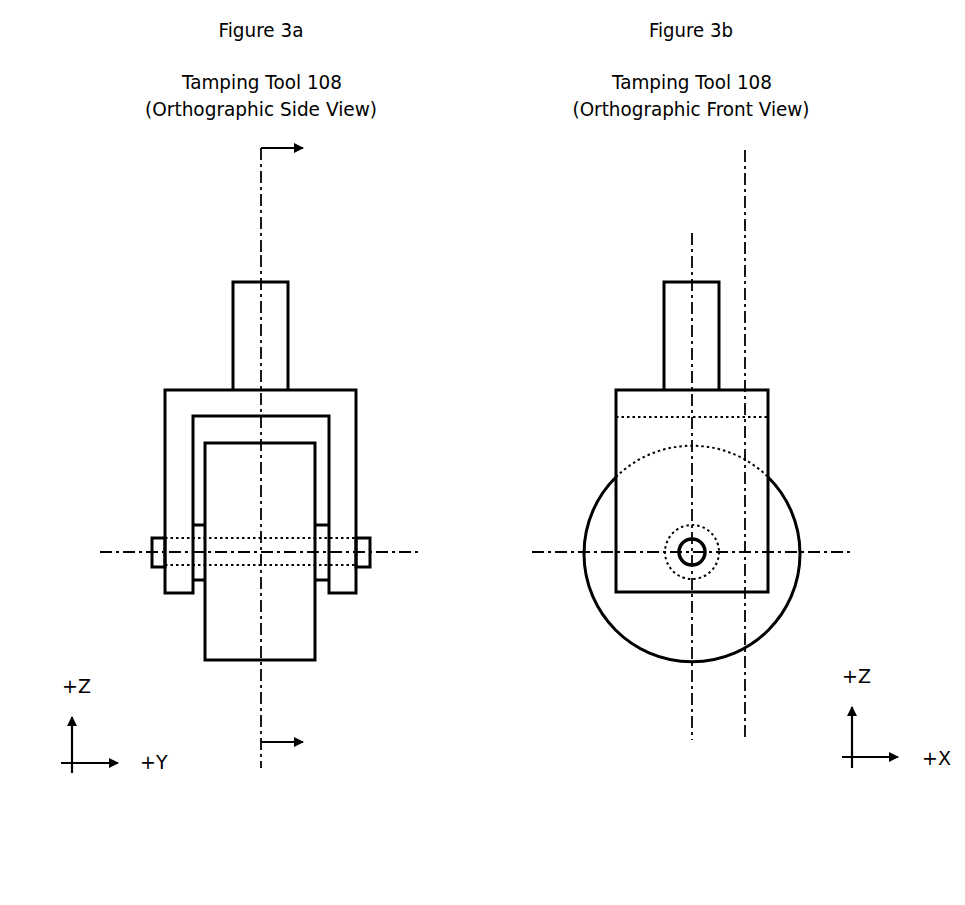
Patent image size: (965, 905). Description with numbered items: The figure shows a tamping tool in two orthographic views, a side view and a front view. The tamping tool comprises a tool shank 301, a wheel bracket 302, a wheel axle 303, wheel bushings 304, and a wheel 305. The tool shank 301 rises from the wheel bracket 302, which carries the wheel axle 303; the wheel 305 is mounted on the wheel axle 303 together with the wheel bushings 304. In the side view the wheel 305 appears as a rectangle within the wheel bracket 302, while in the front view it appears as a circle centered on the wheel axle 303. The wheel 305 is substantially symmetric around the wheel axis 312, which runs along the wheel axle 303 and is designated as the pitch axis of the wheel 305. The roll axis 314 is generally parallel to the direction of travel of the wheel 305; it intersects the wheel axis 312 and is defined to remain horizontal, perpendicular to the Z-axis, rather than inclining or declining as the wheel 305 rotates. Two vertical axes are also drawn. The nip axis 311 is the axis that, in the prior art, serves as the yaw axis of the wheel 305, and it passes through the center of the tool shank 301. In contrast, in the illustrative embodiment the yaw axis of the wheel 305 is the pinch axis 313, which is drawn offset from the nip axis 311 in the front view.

In FIG. 3A, the tool shank 301 is at (288, 335).
In FIG. 3B, the tool shank 301 is at (664, 335).
In FIG. 3A, the wheel bracket 302 is at (315, 389).
In FIG. 3B, the wheel bracket 302 is at (640, 389).
In FIG. 3A, the wheel axle 303 is at (368, 537).
In FIG. 3B, the wheel axle 303 is at (688, 540).
In FIG. 3A, the wheel bushings 304 is at (198, 573).
In FIG. 3B, the wheel bushings 304 is at (677, 563).
In FIG. 3A, the wheel 305 is at (315, 660).
In FIG. 3B, the wheel 305 is at (622, 637).
In FIG. 3A, the nip axis 311 is at (261, 255).
In FIG. 3B, the nip axis 311 is at (692, 256).
In FIG. 3A, the wheel axis 312 is at (380, 550).
In FIG. 3A, the pinch axis 313 is at (261, 200).
In FIG. 3B, the pinch axis 313 is at (745, 201).
In FIG. 3B, the roll axis 314 is at (828, 552).